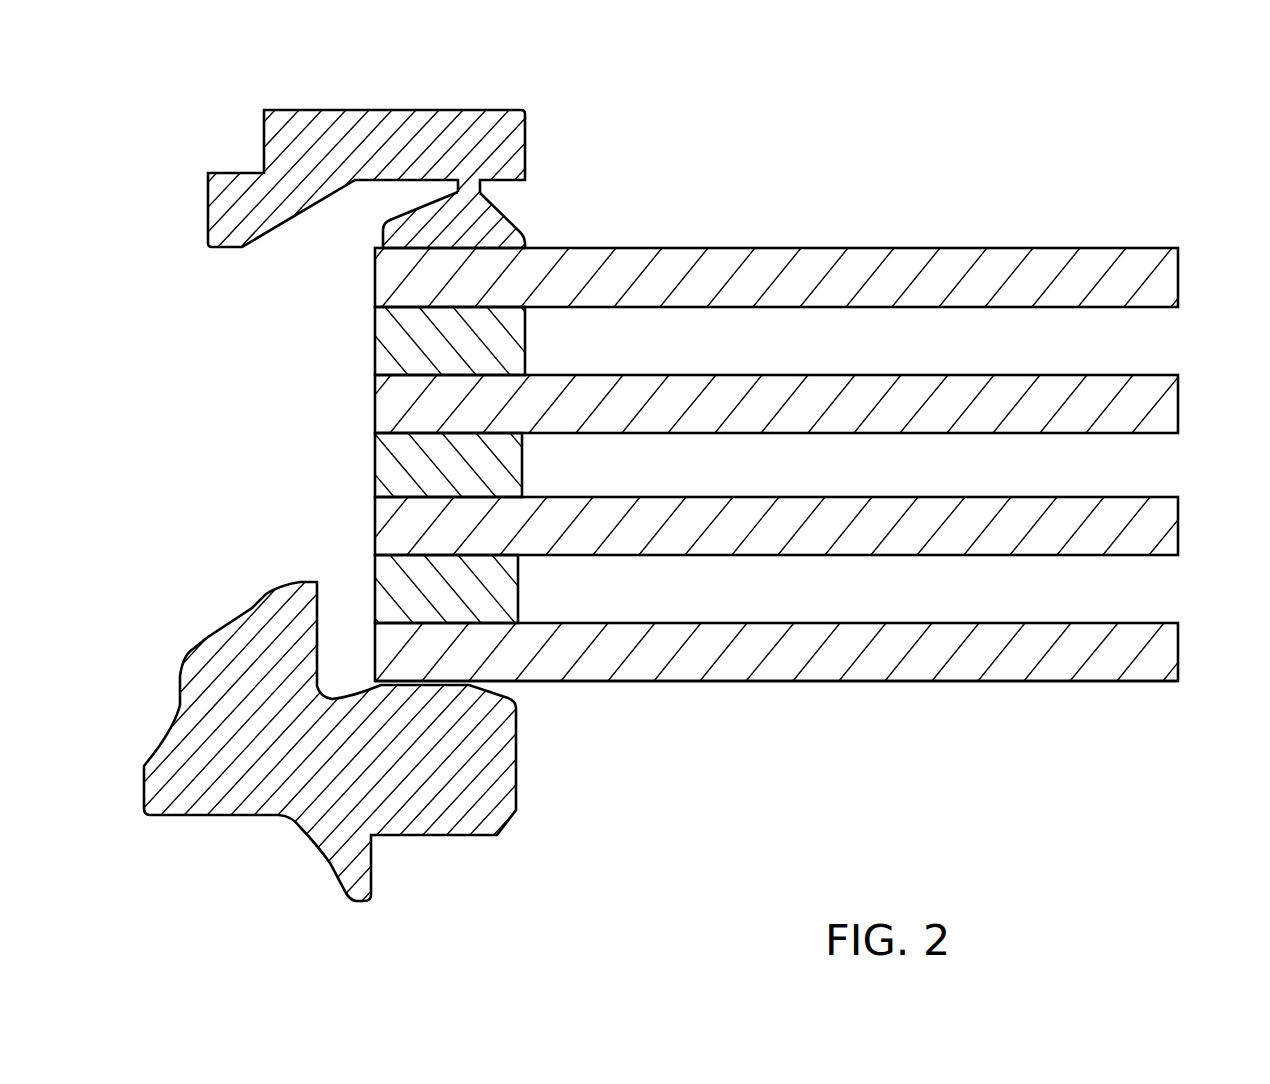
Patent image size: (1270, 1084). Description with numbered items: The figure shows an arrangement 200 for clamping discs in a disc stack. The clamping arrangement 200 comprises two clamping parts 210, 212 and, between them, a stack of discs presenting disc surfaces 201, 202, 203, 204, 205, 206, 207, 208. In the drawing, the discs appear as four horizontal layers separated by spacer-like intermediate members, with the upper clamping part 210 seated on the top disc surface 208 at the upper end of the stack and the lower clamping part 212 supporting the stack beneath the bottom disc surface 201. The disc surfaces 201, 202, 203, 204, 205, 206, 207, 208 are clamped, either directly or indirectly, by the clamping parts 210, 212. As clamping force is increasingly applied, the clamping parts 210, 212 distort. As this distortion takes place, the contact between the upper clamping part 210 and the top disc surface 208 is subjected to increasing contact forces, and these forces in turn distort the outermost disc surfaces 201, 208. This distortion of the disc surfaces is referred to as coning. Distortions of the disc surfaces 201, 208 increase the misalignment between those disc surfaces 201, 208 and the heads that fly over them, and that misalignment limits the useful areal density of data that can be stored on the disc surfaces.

The arrangement for clamping discs 200 is at (497, 72).
The disc surface 201 is at (1153, 681).
The disc surface 202 is at (1155, 623).
The disc surface 203 is at (1153, 555).
The disc surface 204 is at (1153, 497).
The disc surface 205 is at (1152, 433).
The disc surface 206 is at (1152, 373).
The disc surface 207 is at (1158, 307).
The disc surface 208 is at (1158, 248).
The clamping part 210 is at (510, 224).
The clamping part 212 is at (513, 696).